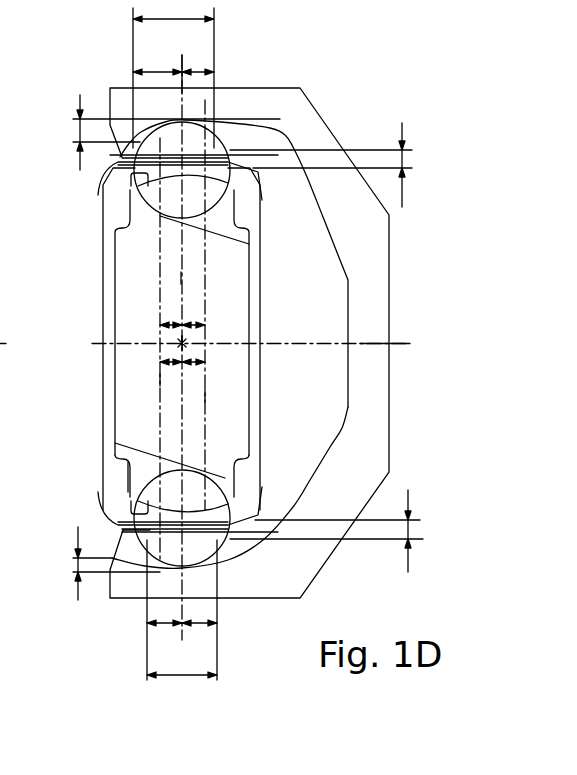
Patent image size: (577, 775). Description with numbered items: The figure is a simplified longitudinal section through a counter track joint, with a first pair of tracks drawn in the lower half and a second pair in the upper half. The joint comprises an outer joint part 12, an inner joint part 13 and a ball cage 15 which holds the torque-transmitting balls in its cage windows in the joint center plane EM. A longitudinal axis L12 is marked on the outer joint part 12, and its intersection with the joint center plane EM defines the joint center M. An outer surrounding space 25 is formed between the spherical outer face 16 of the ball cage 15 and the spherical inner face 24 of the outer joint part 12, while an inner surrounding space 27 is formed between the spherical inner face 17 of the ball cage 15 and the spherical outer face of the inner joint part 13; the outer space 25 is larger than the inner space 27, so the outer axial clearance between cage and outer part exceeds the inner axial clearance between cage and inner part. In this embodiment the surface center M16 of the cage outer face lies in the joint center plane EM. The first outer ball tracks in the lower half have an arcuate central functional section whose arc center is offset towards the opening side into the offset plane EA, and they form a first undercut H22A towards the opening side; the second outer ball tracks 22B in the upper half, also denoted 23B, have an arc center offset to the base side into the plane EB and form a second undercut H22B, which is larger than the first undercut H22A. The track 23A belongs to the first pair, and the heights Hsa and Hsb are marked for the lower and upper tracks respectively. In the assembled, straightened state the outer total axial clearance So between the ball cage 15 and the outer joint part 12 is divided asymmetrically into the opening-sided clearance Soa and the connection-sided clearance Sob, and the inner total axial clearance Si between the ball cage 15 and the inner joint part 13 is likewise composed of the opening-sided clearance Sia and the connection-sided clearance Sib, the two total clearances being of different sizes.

The outer joint part 12 is at (312, 116).
The inner joint part 13 is at (113, 417).
The ball cage 15 is at (128, 507).
The spherical outer face 16 is at (105, 168).
The spherical inner face 17 is at (128, 480).
The second outer ball tracks 22B is at (234, 132).
The outer ball track A 23A is at (210, 490).
The second outer ball tracks 23B is at (220, 217).
The spherical inner face 24 is at (127, 527).
The surrounding space 25 is at (162, 150).
The surrounding space 27 is at (128, 180).
The first undercut H22A is at (122, 535).
The second undercut H22B is at (145, 132).
The track height A dimension Hsa is at (332, 549).
The track height B dimension Hsb is at (339, 166).
The outer total axial clearance So is at (173, 74).
The outer opening-sided axial clearance Soa is at (157, 67).
The connection-sided axial clearance Sob is at (201, 58).
The inner total axial clearance Si is at (182, 622).
The inner opening-sided axial clearance Sia is at (164, 641).
The connection-sided axial clearance Sib is at (199, 641).
The joint center M is at (158, 328).
The joint center plane EM is at (181, 278).
The offset plane EA is at (160, 380).
The plane EB is at (205, 397).
The longitudinal axis L12 is at (360, 342).
The surface center M16 is at (252, 336).